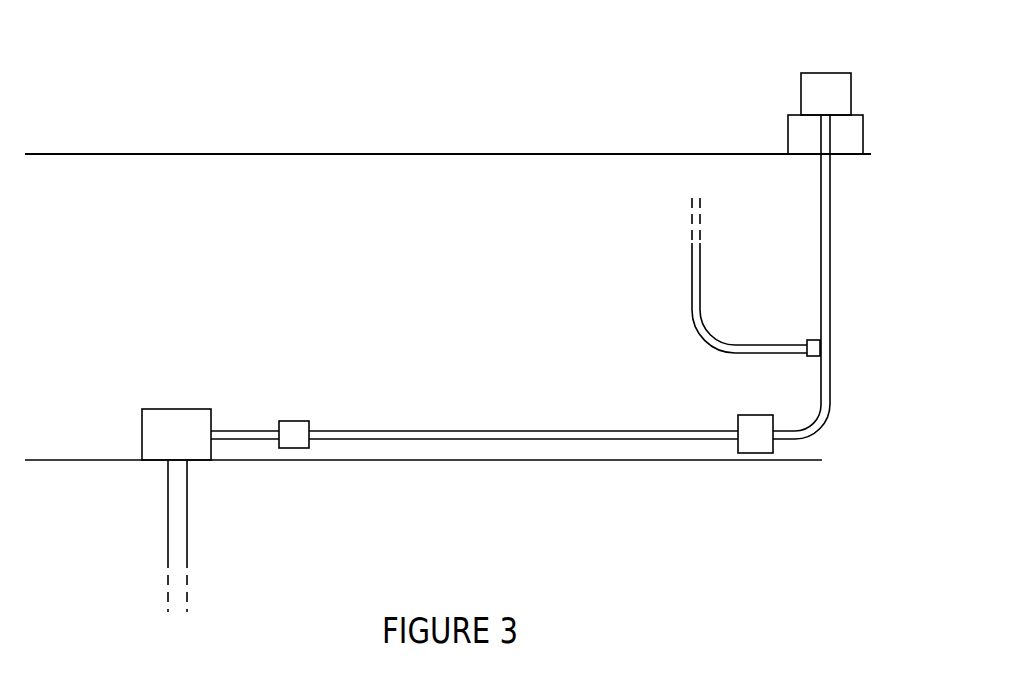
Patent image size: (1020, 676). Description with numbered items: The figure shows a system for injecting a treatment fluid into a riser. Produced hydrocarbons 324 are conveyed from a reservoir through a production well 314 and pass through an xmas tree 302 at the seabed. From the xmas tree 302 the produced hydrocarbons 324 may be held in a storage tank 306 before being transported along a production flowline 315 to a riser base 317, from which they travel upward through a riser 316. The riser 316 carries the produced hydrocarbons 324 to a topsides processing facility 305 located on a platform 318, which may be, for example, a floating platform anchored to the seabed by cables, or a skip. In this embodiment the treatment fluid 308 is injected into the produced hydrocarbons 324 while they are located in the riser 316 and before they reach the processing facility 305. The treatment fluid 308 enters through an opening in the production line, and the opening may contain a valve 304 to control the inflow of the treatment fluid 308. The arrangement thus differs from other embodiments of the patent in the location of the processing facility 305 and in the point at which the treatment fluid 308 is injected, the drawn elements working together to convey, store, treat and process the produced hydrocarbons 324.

The xmas tree 302 is at (178, 409).
The valve 304 is at (805, 345).
The topsides processing facility 305 is at (827, 73).
The storage tank 306 is at (293, 421).
The treatment fluid 308 is at (692, 310).
The production well 314 is at (208, 535).
The production flowline 315 is at (510, 430).
The riser 316 is at (830, 315).
The riser base 317 is at (760, 428).
The platform 318 is at (858, 115).
The produced hydrocarbons 324 is at (177, 510).